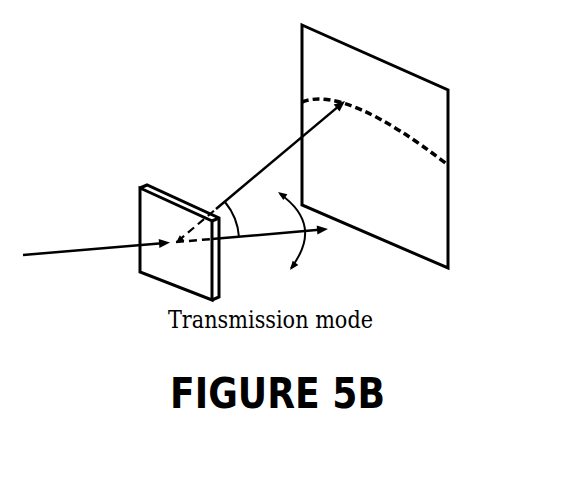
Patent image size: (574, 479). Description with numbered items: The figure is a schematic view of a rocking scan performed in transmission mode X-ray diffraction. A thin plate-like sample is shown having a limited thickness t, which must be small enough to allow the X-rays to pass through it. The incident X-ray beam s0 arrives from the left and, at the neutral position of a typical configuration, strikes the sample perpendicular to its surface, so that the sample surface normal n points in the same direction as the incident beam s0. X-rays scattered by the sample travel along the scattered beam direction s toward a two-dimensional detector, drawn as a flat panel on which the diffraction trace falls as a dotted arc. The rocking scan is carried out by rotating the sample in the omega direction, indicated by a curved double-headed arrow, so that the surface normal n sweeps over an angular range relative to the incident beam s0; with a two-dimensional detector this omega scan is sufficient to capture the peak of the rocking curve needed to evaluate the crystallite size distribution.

The sample thickness t is at (177, 233).
The incident X-ray beam direction s0 is at (117, 240).
The scattered X-ray beam direction s is at (260, 172).
The sample surface normal n is at (330, 146).